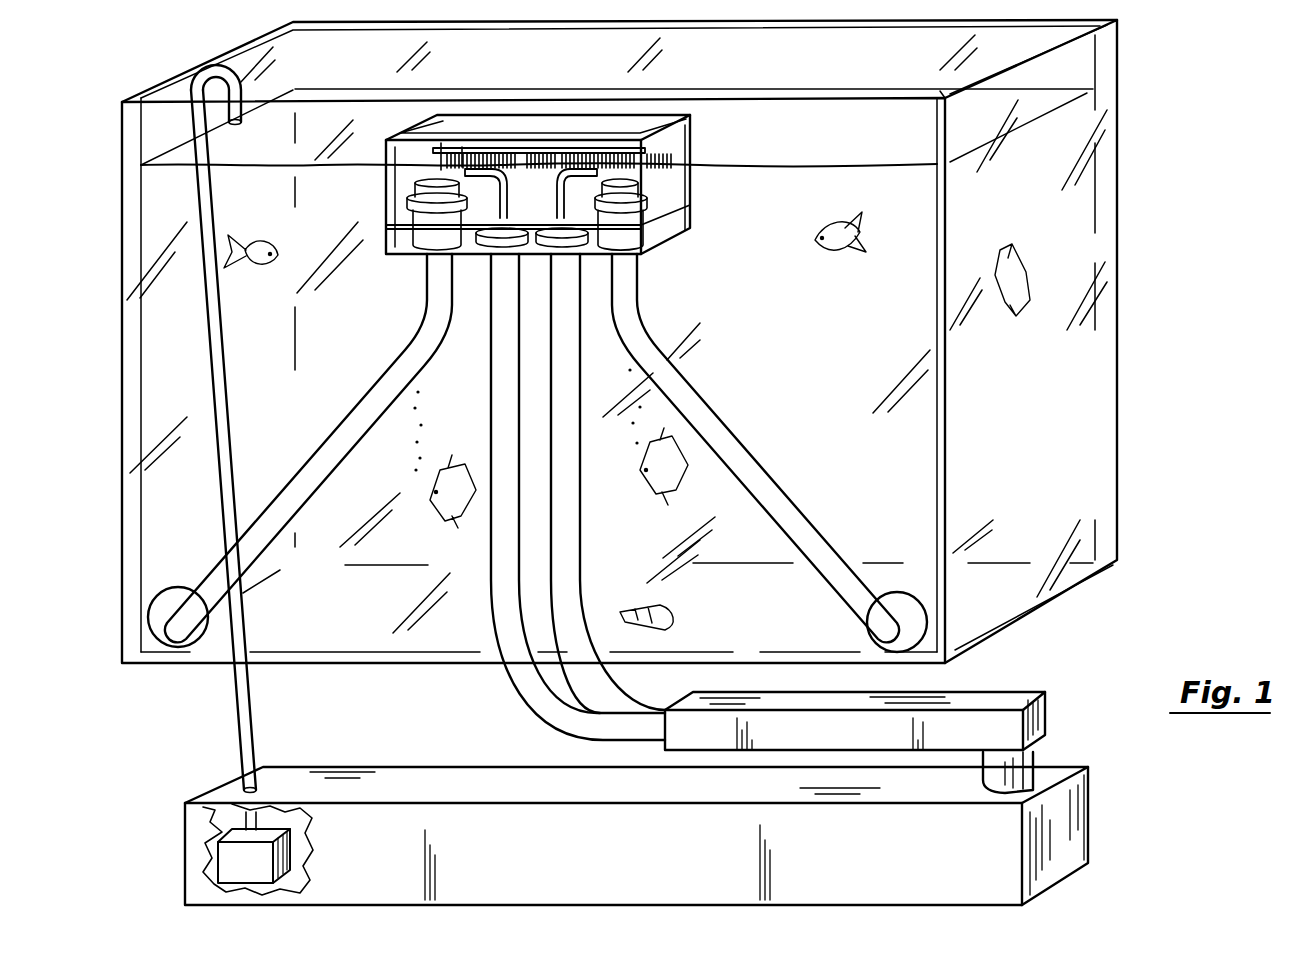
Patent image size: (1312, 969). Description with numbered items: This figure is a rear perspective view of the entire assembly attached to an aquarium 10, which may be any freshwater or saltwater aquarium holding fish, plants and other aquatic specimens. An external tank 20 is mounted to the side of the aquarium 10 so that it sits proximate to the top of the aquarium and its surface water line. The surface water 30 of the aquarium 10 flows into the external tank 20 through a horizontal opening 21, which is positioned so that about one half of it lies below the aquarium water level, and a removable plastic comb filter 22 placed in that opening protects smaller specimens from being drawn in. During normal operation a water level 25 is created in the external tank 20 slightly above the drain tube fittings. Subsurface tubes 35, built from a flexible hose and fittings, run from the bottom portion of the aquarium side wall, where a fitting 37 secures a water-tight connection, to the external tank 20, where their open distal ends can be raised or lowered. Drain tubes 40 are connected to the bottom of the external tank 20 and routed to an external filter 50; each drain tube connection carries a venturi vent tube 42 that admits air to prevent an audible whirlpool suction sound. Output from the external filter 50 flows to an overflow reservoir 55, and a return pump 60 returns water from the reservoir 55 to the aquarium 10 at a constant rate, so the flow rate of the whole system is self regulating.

The aquarium 10 is at (1120, 290).
The external tank 20 is at (666, 125).
The horizontal opening 21 is at (460, 143).
The comb filter 22 is at (668, 143).
The water level 25 is at (680, 212).
The surface water 30 is at (378, 90).
The subsurface tubes 35 is at (313, 468).
The fitting 37 is at (170, 596).
The drain tubes 40 is at (503, 413).
The venturi vent tubes 42 is at (507, 182).
The external filter 50 is at (998, 697).
The overflow reservoir 55 is at (453, 787).
The return pump 60 is at (235, 863).